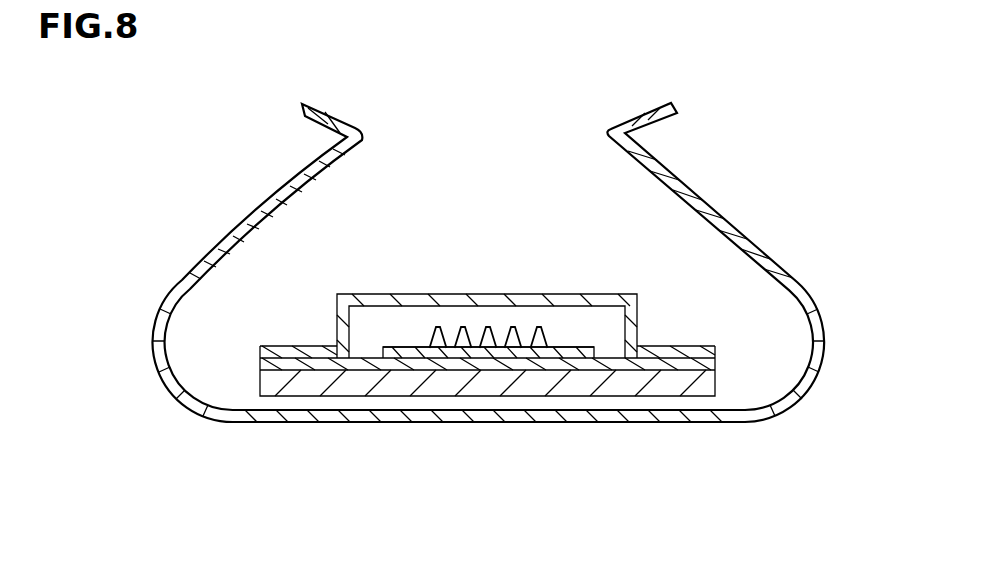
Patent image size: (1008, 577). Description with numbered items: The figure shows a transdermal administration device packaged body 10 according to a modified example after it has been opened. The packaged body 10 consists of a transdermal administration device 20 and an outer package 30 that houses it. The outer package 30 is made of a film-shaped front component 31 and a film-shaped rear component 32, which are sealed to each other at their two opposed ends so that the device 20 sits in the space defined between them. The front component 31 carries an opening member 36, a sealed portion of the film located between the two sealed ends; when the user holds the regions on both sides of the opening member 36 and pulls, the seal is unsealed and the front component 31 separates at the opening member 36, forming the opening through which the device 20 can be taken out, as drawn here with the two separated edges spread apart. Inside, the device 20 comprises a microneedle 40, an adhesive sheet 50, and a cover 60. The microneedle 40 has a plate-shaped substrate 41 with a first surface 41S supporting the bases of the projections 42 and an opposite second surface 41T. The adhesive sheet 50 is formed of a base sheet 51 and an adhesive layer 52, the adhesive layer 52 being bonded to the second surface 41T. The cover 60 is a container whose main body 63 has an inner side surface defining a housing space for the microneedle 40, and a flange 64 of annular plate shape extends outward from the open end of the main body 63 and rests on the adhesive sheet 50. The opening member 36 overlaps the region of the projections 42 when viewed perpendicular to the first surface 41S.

The transdermal administration device packaged body 10 is at (128, 146).
The transdermal administration device 20 is at (721, 317).
The outer package 30 is at (827, 338).
The front component 31 is at (742, 223).
The rear component 32 is at (700, 422).
The opening member 36 is at (630, 118).
The microneedle 40 is at (612, 250).
The substrate 41 is at (572, 343).
The first surface 41S is at (390, 345).
The second surface 41T is at (438, 345).
The projection 42 is at (547, 343).
The adhesive sheet 50 is at (128, 403).
The base sheet 51 is at (258, 388).
The adhesive layer 52 is at (260, 366).
The cover 60 is at (637, 323).
The main body 63 is at (337, 308).
The flange 64 is at (287, 345).